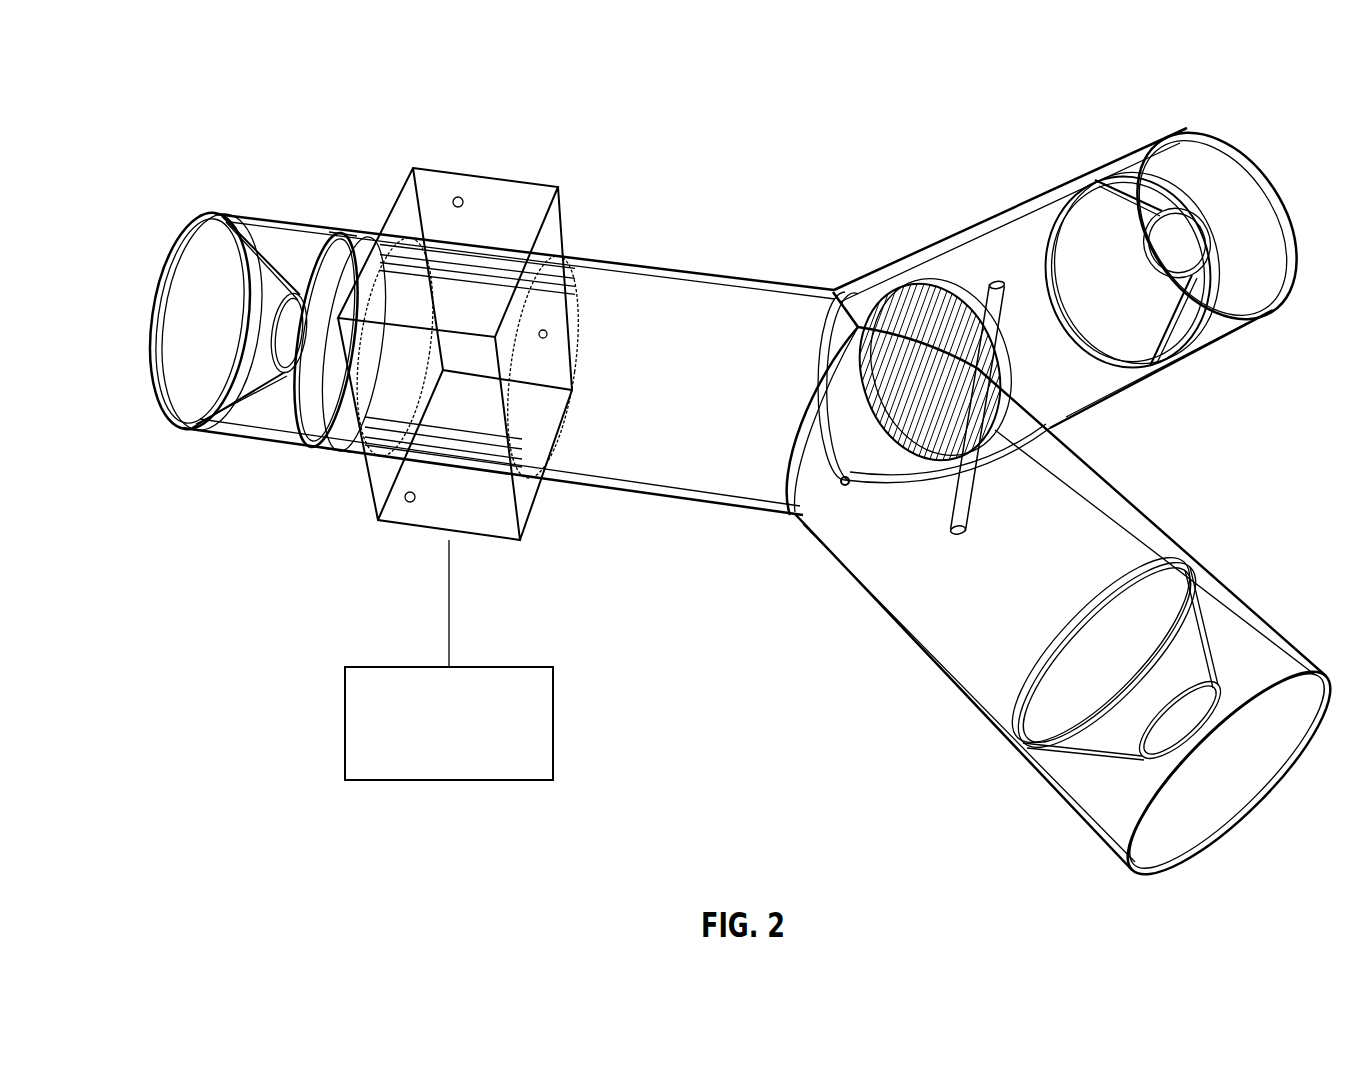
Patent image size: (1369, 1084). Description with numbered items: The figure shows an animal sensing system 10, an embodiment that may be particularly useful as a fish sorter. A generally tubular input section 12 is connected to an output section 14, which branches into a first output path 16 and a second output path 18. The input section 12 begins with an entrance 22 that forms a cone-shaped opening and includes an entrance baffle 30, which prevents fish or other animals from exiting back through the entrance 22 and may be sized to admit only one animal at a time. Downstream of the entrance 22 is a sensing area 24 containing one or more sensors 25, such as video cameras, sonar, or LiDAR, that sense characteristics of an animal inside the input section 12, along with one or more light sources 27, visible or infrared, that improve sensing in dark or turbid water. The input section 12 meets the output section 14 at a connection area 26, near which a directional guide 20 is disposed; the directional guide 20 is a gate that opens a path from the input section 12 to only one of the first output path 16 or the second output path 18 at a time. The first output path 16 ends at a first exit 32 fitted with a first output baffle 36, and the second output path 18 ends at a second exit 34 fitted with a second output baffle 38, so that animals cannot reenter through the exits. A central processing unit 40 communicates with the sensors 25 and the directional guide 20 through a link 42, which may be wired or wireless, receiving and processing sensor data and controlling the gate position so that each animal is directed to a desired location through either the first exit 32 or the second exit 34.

The animal sensing system 10 is at (116, 88).
The input section 12 is at (624, 476).
The output section 14 is at (1054, 431).
The first output path 16 is at (1018, 250).
The second output path 18 is at (972, 655).
The directional guide 20 is at (892, 300).
The entrance 22 is at (199, 268).
The sensing area 24 is at (525, 198).
The sensors 25 is at (548, 337).
The connection area 26 is at (815, 483).
The light sources 27 is at (460, 196).
The entrance baffle 30 is at (341, 266).
The first exit 32 is at (1238, 195).
The second exit 34 is at (1270, 760).
The first output baffle 36 is at (1078, 213).
The second output baffle 38 is at (1160, 595).
The central processing unit 40 is at (344, 723).
The link 42 is at (447, 598).